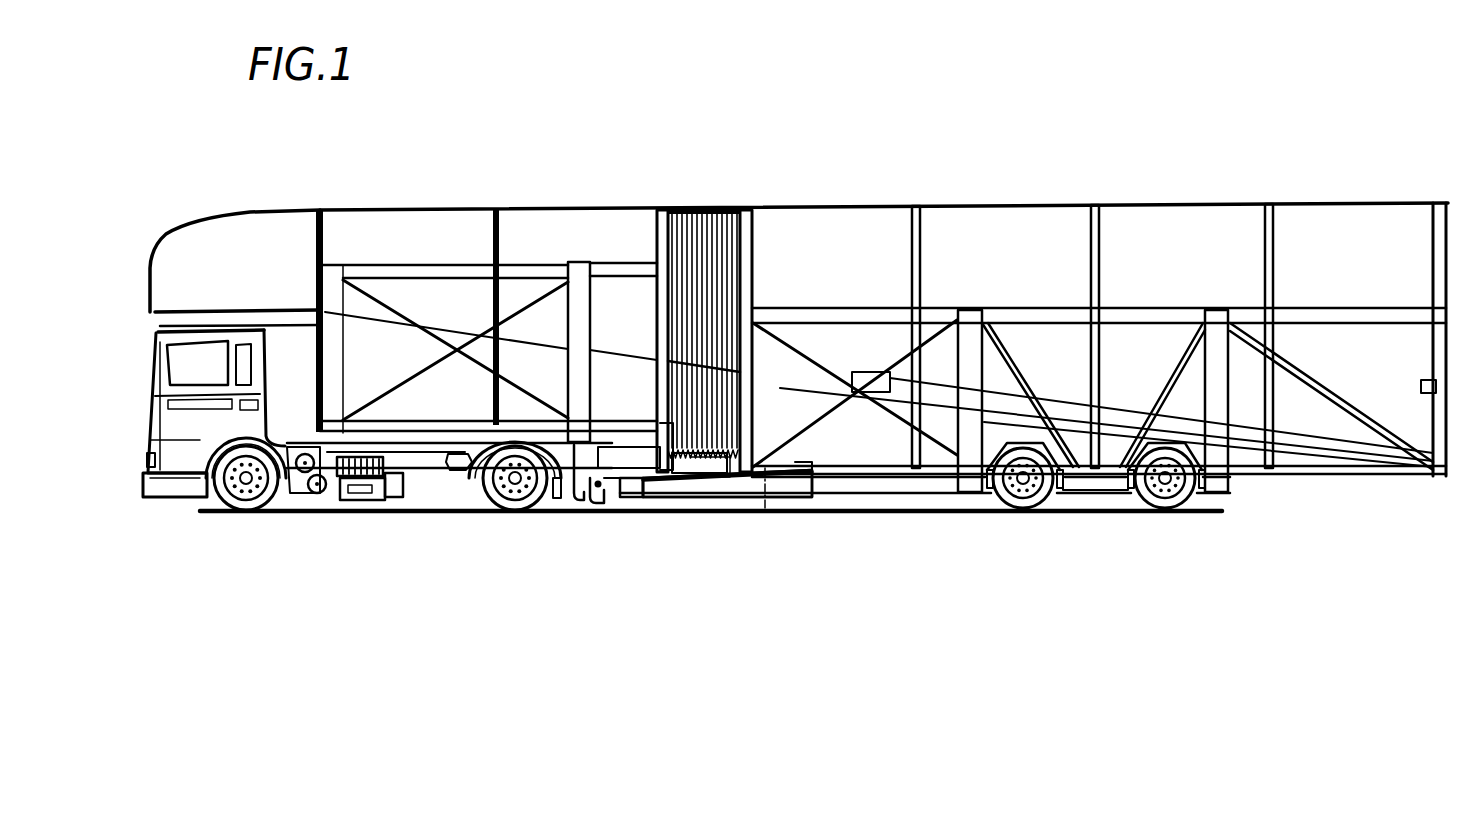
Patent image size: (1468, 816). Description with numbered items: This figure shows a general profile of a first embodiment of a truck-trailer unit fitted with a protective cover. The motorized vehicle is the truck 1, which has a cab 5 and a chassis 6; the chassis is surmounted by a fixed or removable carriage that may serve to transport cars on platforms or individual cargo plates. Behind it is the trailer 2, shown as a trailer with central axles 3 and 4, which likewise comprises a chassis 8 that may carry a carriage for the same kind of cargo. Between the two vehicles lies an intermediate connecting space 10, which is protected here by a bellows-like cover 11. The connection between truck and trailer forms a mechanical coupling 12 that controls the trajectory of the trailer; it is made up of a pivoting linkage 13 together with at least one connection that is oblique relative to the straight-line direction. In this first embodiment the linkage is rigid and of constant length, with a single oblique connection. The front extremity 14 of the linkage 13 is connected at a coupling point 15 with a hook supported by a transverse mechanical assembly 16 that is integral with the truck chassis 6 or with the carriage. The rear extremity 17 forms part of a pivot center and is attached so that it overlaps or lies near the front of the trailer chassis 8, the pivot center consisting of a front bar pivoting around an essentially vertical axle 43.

The truck 1 is at (353, 570).
The trailer 2 is at (1091, 540).
The central axle 3 is at (1033, 503).
The central axle 4 is at (1170, 503).
The cab 5 is at (160, 500).
The chassis 6 is at (430, 470).
The chassis 8 is at (950, 483).
The intermediate connecting space 10 is at (720, 192).
The bellows-like cover 11 is at (690, 207).
The mechanical coupling 12 is at (691, 495).
The pivoting linkage 13 is at (727, 528).
The front extremity 14 is at (630, 510).
The coupling point 15 is at (601, 504).
The transverse mechanical assembly 16 is at (581, 501).
The rear extremity 17 is at (770, 530).
The vertical axle 43 is at (796, 524).